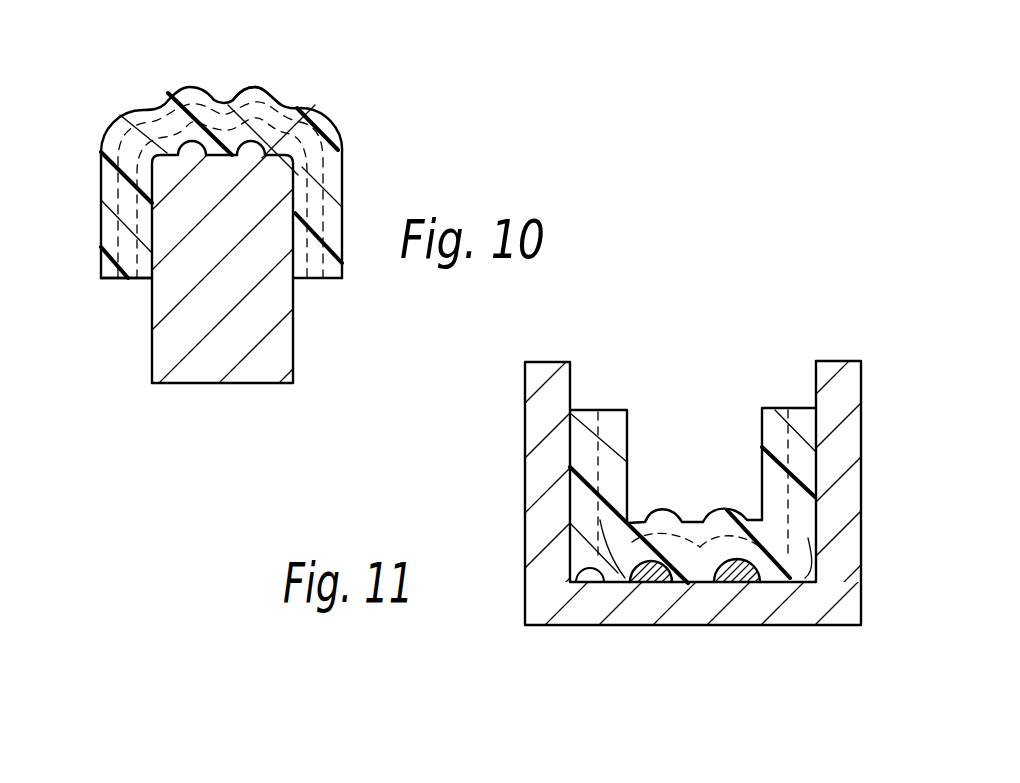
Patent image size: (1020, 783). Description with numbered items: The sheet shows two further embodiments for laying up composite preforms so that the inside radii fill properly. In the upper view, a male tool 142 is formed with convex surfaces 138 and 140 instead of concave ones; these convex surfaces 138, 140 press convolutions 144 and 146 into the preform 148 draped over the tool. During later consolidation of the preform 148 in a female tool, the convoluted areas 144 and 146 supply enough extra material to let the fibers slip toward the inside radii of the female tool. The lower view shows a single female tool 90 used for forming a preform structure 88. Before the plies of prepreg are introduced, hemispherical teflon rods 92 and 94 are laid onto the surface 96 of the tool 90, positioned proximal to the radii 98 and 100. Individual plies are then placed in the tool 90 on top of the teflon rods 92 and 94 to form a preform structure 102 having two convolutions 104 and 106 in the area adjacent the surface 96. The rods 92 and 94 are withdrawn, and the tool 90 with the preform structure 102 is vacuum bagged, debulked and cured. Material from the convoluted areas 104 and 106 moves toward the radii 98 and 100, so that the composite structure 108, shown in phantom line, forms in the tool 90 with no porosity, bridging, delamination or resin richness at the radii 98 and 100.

In FIG. 11, the preform structure 88 is at (772, 408).
In FIG. 11, the tool 90 is at (848, 405).
In FIG. 11, the hemispherical teflon rod 92 is at (737, 584).
In FIG. 11, the hemispherical teflon rod 94 is at (653, 584).
In FIG. 11, the surface 96 is at (713, 555).
In FIG. 11, the radius 98 is at (805, 552).
In FIG. 11, the radius 100 is at (603, 584).
In FIG. 11, the preform structure 102 is at (605, 412).
In FIG. 11, the convolution 104 is at (660, 505).
In FIG. 11, the convolution 106 is at (717, 515).
In FIG. 11, the composite structure 108 is at (805, 408).
In FIG. 10, the convex surface 138 is at (197, 143).
In FIG. 10, the convex surface 140 is at (307, 111).
In FIG. 10, the male tool 142 is at (218, 164).
In FIG. 10, the convolution 144 is at (190, 88).
In FIG. 10, the convolution 146 is at (270, 88).
In FIG. 10, the preform 148 is at (130, 280).